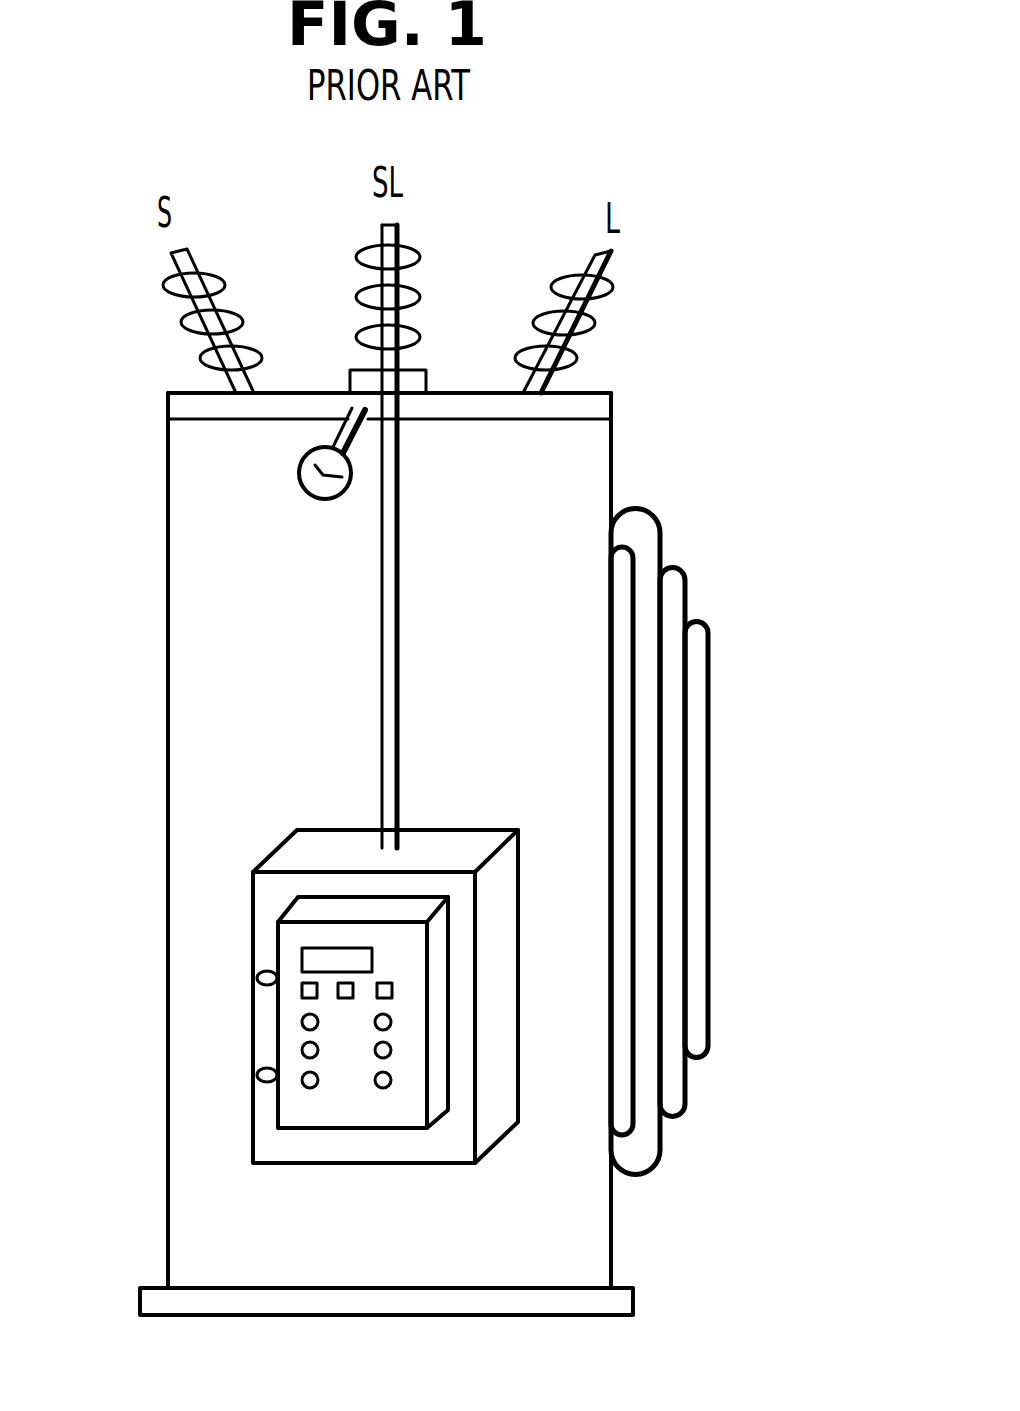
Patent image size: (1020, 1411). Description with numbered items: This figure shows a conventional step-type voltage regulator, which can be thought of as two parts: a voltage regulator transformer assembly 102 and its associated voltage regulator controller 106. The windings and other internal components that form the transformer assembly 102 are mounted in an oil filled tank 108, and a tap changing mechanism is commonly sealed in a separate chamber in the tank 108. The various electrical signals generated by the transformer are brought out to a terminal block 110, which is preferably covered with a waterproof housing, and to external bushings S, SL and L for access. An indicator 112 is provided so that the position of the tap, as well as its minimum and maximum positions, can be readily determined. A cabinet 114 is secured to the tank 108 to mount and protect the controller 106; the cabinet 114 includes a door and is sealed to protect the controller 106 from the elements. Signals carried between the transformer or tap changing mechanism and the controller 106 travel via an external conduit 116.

The voltage regulator transformer assembly 102 is at (642, 435).
The voltage regulator controller 106 is at (330, 1113).
The tank 108 is at (557, 1258).
The terminal block 110 is at (432, 382).
The indicator 112 is at (302, 488).
The cabinet 114 is at (338, 847).
The external conduit 116 is at (380, 685).